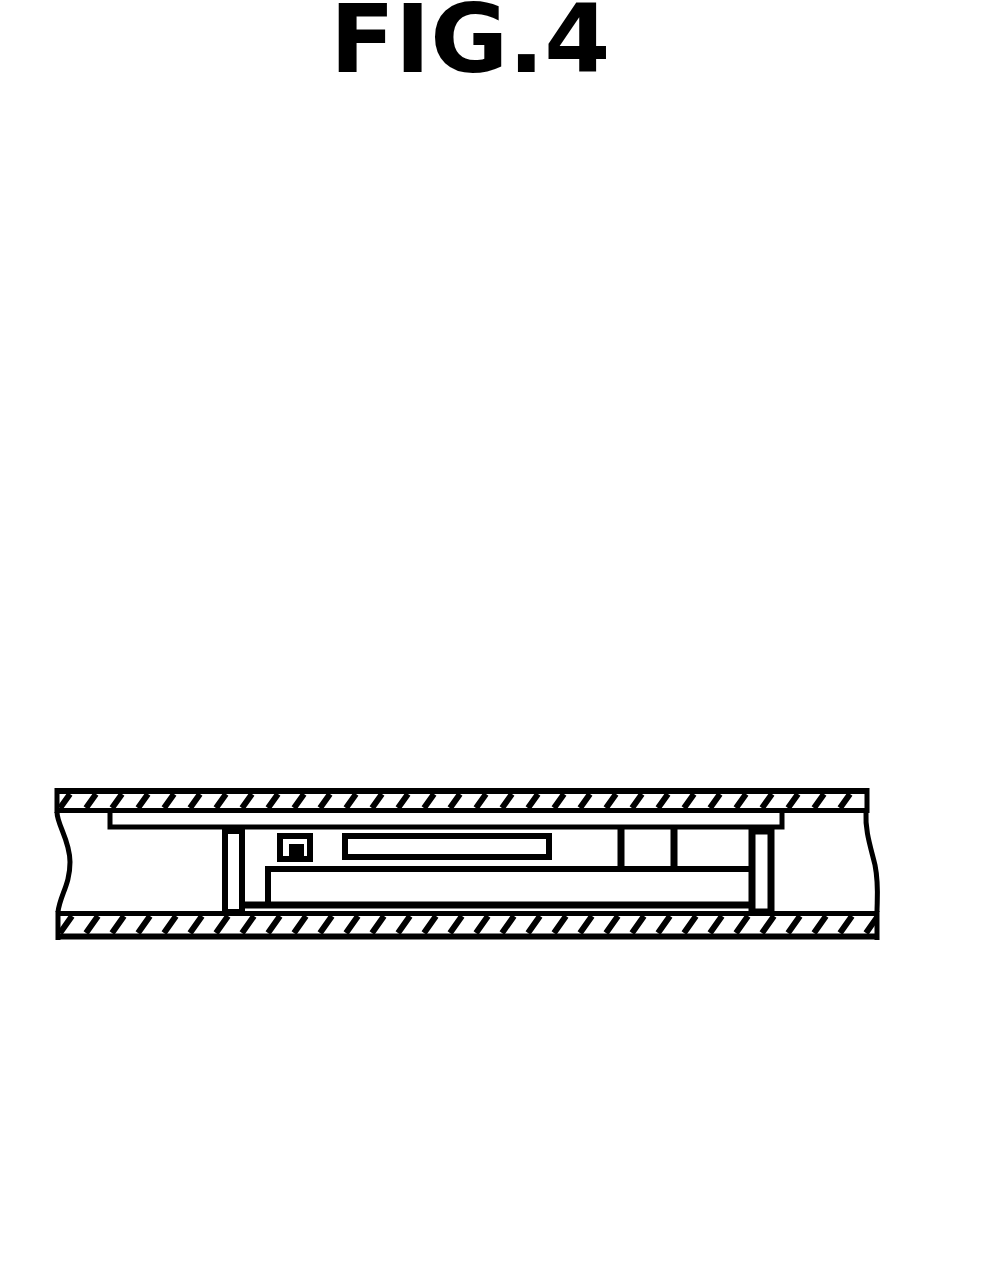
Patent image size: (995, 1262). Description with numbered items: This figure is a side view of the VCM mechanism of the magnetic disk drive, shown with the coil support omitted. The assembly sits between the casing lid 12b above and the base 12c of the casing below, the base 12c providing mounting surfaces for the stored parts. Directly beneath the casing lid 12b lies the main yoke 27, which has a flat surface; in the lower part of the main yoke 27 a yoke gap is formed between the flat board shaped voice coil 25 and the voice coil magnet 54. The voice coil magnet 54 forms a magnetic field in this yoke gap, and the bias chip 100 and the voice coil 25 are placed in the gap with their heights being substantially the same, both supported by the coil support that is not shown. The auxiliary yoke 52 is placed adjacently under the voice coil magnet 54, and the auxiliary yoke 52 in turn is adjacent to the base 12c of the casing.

The casing lid 12b is at (580, 791).
The base 12c is at (608, 940).
The main yoke 27 is at (380, 824).
The voice coil 25 is at (425, 838).
The bias chip 100 is at (288, 834).
The voice coil magnet 54 is at (383, 890).
The auxiliary yoke 52 is at (523, 908).